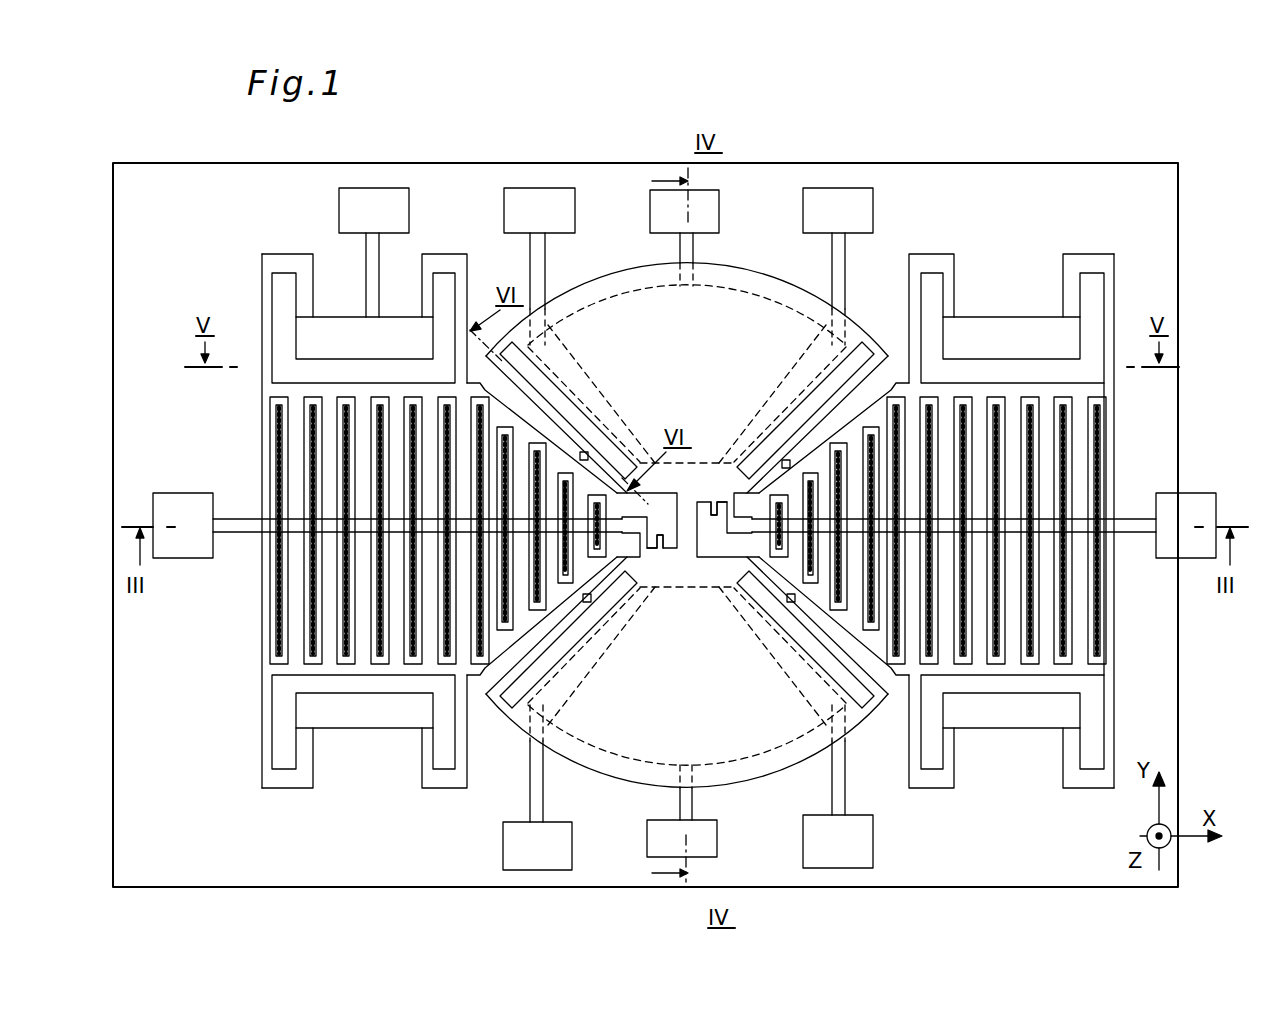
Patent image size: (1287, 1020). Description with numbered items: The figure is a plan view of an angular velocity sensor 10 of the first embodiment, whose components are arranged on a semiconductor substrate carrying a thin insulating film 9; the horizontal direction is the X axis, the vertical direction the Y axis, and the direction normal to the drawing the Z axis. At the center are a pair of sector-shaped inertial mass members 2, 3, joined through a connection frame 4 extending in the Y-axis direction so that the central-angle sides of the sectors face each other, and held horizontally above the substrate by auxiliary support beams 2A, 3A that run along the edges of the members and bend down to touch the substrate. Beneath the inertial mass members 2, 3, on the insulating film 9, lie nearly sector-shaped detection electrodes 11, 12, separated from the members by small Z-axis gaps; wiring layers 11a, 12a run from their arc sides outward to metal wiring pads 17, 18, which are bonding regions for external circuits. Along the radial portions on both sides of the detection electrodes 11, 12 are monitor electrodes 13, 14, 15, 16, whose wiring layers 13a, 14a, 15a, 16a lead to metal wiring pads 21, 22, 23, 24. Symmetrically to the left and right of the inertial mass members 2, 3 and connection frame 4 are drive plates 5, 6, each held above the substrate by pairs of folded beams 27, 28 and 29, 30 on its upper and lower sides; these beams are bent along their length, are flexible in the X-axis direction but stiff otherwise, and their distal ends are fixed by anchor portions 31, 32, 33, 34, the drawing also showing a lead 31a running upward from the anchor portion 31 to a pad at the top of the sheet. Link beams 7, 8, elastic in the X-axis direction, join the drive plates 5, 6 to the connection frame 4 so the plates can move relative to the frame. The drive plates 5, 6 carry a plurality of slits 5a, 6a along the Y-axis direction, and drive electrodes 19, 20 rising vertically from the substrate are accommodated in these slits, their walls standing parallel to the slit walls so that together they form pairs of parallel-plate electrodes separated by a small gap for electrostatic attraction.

The inertial mass member 2 is at (736, 272).
The auxiliary support beam 2A is at (545, 364).
The inertial mass member 3 is at (760, 775).
The auxiliary support beam 3A is at (515, 673).
The connection frame 4 is at (688, 548).
The drive plate 5 is at (262, 632).
The slit 5a is at (272, 450).
The drive plate 6 is at (1114, 632).
The slit 6a is at (1104, 450).
The link beam 7 is at (653, 550).
The link beam 8 is at (713, 500).
The insulating film 9 is at (1020, 172).
The angular velocity sensor 10 is at (618, 898).
The detection electrode 11 is at (618, 278).
The wiring layer 11a is at (680, 248).
The detection electrode 12 is at (623, 762).
The wiring layer 12a is at (680, 805).
The monitor electrode 13 is at (590, 362).
The wiring layer 13a is at (530, 248).
The monitor electrode 14 is at (790, 362).
The wiring layer 14a is at (845, 258).
The monitor electrode 15 is at (566, 697).
The wiring layer 15a is at (530, 790).
The monitor electrode 16 is at (776, 697).
The wiring layer 16a is at (845, 790).
The metal wiring pad 17 is at (712, 210).
The metal wiring pad 18 is at (712, 855).
The drive electrode 19 is at (262, 577).
The drive electrode 20 is at (1100, 577).
The metal wiring pad 21 is at (505, 203).
The metal wiring pad 22 is at (855, 195).
The metal wiring pad 23 is at (508, 850).
The metal wiring pad 24 is at (870, 852).
The folded beam 27 is at (262, 292).
The folded beam 28 is at (262, 755).
The folded beam 29 is at (1114, 294).
The folded beam 30 is at (1114, 758).
The anchor portion 31 is at (330, 325).
The anchor lead 31a is at (372, 258).
The anchor portion 32 is at (348, 728).
The anchor portion 33 is at (1005, 325).
The anchor portion 34 is at (1010, 728).